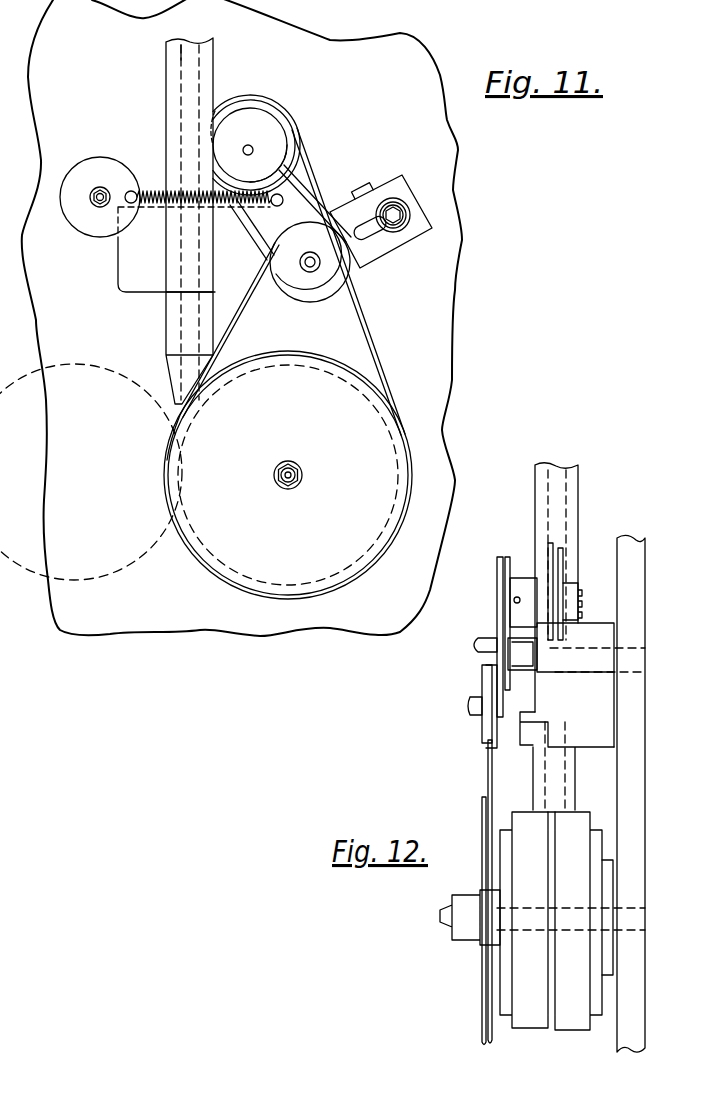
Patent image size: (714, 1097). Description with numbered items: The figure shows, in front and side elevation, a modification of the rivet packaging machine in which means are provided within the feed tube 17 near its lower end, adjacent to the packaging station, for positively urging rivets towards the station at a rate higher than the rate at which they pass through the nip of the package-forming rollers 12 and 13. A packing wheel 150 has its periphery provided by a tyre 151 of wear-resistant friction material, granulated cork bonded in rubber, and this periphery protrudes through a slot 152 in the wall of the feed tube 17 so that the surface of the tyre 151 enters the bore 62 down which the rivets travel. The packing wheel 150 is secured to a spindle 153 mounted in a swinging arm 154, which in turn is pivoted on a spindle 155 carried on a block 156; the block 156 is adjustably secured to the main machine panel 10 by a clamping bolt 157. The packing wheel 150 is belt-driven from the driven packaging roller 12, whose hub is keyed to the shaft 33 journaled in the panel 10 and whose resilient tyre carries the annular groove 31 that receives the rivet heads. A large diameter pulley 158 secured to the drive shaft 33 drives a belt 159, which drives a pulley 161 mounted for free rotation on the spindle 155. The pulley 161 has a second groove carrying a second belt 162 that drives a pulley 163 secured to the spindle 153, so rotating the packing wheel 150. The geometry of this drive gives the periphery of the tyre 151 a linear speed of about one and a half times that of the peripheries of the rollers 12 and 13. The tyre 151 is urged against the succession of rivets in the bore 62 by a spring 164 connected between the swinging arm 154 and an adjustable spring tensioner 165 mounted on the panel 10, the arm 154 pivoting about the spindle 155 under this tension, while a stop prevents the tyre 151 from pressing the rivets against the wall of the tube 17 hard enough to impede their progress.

In FIG. 12, the machine panel 10 is at (622, 770).
In FIG. 11, the package-forming roller 12 is at (388, 445).
In FIG. 12, the package-forming roller 12 is at (520, 852).
In FIG. 11, the package-forming roller 13 is at (92, 368).
In FIG. 11, the feed tube 17 is at (213, 67).
In FIG. 12, the feed tube 17 is at (537, 791).
In FIG. 12, the annular groove 31 is at (553, 830).
In FIG. 12, the shaft 33 is at (570, 910).
In FIG. 11, the bore 62 is at (212, 52).
In FIG. 12, the bore 62 is at (535, 768).
In FIG. 11, the packing wheel 150 is at (290, 127).
In FIG. 12, the packing wheel 150 is at (563, 562).
In FIG. 11, the tyre 151 is at (277, 104).
In FIG. 12, the tyre 151 is at (550, 555).
In FIG. 11, the slot 152 is at (207, 100).
In FIG. 11, the spindle 153 is at (250, 145).
In FIG. 12, the spindle 153 is at (492, 600).
In FIG. 11, the swinging arm 154 is at (265, 216).
In FIG. 12, the swinging arm 154 is at (535, 610).
In FIG. 11, the spindle 155 is at (310, 262).
In FIG. 12, the spindle 155 is at (470, 705).
In FIG. 11, the block 156 is at (390, 247).
In FIG. 11, the clamping bolt 157 is at (398, 208).
In FIG. 12, the clamping bolt 157 is at (546, 654).
In FIG. 11, the large diameter pulley 158 is at (367, 420).
In FIG. 12, the large diameter pulley 158 is at (478, 972).
In FIG. 11, the belt 159 is at (376, 338).
In FIG. 12, the belt 159 is at (483, 762).
In FIG. 11, the pulley 161 is at (335, 293).
In FIG. 12, the pulley 161 is at (478, 728).
In FIG. 11, the second belt 162 is at (312, 190).
In FIG. 12, the second belt 162 is at (503, 658).
In FIG. 11, the pulley 163 is at (277, 148).
In FIG. 12, the pulley 163 is at (497, 573).
In FIG. 11, the spring 164 is at (152, 188).
In FIG. 11, the adjustable spring tensioner 165 is at (107, 167).